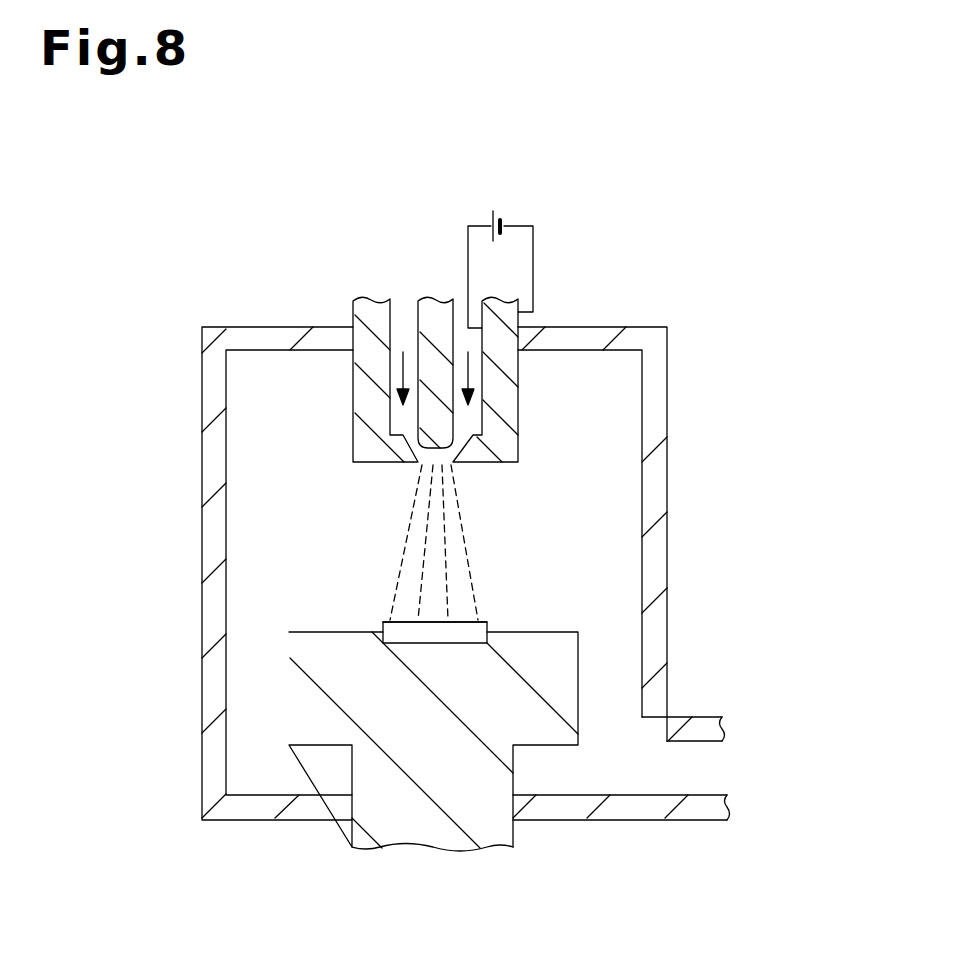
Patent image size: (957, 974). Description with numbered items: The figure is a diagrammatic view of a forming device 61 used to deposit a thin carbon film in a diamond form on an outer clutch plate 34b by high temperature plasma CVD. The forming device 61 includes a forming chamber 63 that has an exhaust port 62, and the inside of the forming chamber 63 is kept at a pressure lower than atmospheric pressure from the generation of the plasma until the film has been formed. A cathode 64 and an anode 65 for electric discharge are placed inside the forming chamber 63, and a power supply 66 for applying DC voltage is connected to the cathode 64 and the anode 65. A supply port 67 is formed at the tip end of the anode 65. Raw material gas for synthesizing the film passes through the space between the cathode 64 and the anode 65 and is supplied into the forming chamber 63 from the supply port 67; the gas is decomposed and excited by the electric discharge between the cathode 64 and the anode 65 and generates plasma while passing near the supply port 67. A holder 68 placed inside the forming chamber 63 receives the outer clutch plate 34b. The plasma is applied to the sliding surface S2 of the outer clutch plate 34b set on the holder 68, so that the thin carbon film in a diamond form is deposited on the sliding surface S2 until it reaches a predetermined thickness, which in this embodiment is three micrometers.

The forming device 61 is at (648, 239).
The exhaust port 62 is at (705, 742).
The forming chamber 63 is at (667, 446).
The cathode 64 is at (436, 309).
The anode 65 is at (367, 393).
The power supply 66 is at (511, 216).
The supply port 67 is at (445, 464).
The holder 68 is at (578, 703).
The outer clutch plate 34b is at (482, 630).
The sliding surface S2 is at (398, 620).